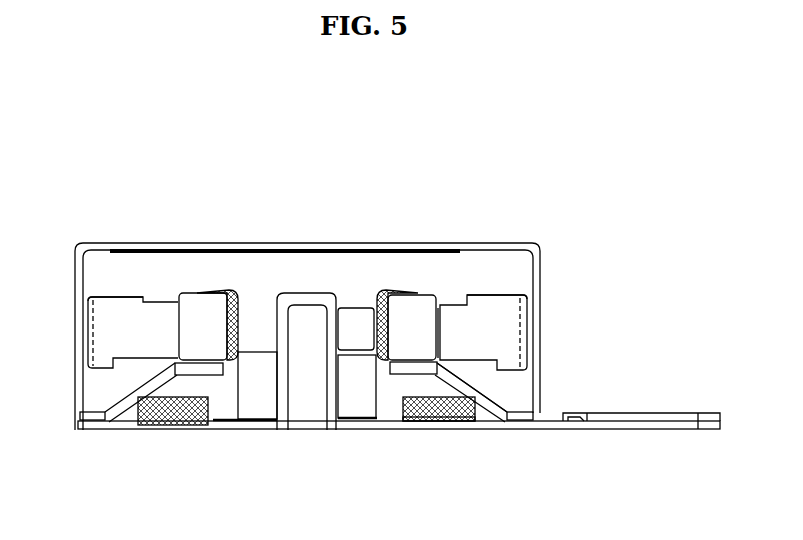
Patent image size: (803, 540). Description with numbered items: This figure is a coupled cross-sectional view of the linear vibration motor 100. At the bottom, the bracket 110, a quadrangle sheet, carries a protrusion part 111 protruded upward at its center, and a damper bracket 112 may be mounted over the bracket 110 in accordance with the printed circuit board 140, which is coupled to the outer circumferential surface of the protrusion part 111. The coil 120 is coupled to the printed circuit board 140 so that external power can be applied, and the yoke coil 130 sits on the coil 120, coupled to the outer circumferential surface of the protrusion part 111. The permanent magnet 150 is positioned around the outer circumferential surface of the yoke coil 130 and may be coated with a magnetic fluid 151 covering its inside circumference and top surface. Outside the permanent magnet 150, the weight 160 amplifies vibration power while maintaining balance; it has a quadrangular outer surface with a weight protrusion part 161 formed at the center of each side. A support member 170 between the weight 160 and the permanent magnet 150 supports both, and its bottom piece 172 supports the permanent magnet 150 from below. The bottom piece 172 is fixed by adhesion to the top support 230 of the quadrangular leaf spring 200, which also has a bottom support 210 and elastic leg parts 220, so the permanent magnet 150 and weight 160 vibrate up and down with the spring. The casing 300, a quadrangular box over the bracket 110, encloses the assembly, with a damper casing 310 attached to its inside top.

The linear vibration motor 100 is at (163, 139).
The bracket 110 is at (551, 430).
The protrusion part 111 is at (282, 380).
The damper bracket 112 is at (450, 417).
The coil 120 is at (353, 407).
The yoke coil 130 is at (353, 315).
The printed circuit board 140 is at (493, 403).
The permanent magnet 150 is at (192, 302).
The magnetic fluid 151 is at (237, 293).
The weight 160 is at (118, 338).
The weight protrusion part 161 is at (90, 300).
The support member 170 is at (460, 333).
The bottom piece 172 is at (403, 362).
The quadrangular leaf spring 200 is at (126, 383).
The bottom support 210 is at (92, 432).
The elastic leg parts 220 is at (130, 425).
The top support 230 is at (215, 375).
The casing 300 is at (480, 247).
The damper casing 310 is at (395, 248).